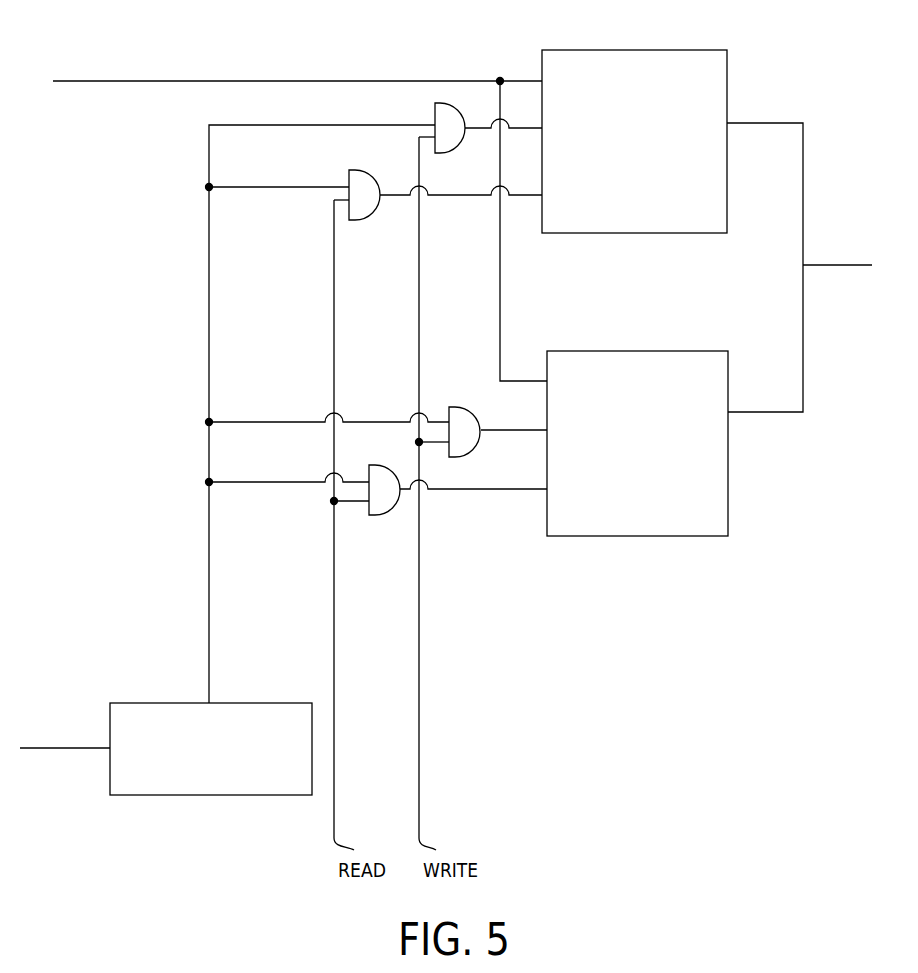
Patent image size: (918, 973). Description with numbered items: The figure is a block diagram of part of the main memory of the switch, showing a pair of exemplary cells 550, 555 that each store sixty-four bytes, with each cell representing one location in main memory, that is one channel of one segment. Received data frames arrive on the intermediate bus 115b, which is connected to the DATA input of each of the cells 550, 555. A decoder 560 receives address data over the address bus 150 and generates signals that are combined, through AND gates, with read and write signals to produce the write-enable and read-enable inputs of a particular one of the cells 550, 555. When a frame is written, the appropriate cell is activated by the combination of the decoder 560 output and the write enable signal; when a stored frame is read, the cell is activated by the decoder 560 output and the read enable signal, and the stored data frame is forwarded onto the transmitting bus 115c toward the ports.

The intermediate bus 115b is at (136, 81).
The transmitting bus 115c is at (822, 265).
The cell 550 is at (645, 50).
The cell 555 is at (649, 351).
The decoder 560 is at (182, 703).
The address bus 150 is at (72, 748).